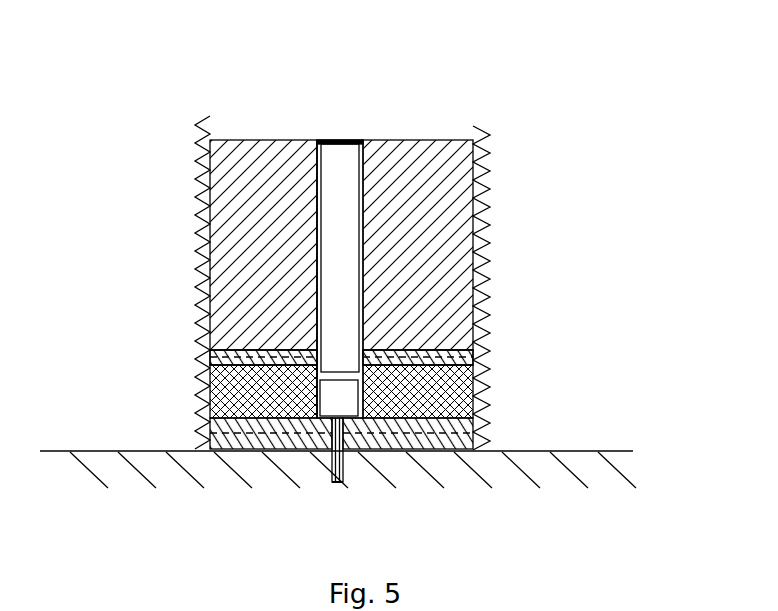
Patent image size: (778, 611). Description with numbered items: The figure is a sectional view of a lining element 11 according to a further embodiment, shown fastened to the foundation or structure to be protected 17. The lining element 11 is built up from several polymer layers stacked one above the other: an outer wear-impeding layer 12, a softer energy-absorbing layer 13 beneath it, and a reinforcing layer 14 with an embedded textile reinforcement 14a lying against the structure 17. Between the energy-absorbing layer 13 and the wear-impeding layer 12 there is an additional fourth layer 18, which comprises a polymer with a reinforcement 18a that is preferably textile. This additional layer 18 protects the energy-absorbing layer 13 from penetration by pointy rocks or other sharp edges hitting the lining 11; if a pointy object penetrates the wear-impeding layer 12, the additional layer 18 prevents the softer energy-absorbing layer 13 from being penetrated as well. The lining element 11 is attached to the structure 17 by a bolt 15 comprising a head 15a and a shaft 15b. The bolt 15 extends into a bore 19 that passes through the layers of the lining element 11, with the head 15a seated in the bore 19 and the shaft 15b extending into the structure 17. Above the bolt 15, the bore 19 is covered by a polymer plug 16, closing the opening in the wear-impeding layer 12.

The lining element 11 is at (520, 183).
The wear-impeding layer 12 is at (485, 331).
The energy-absorbing layer 13 is at (483, 386).
The reinforcing layer 14 is at (483, 418).
The textile reinforcement 14a is at (483, 440).
The bolt 15 is at (330, 478).
The head 15a is at (326, 416).
The shaft 15b is at (347, 481).
The polymer plug 16 is at (326, 140).
The foundation or structure to be protected 17 is at (50, 451).
The additional fourth layer 18 is at (205, 350).
The reinforcement 18a is at (483, 352).
The bore 19 is at (317, 187).